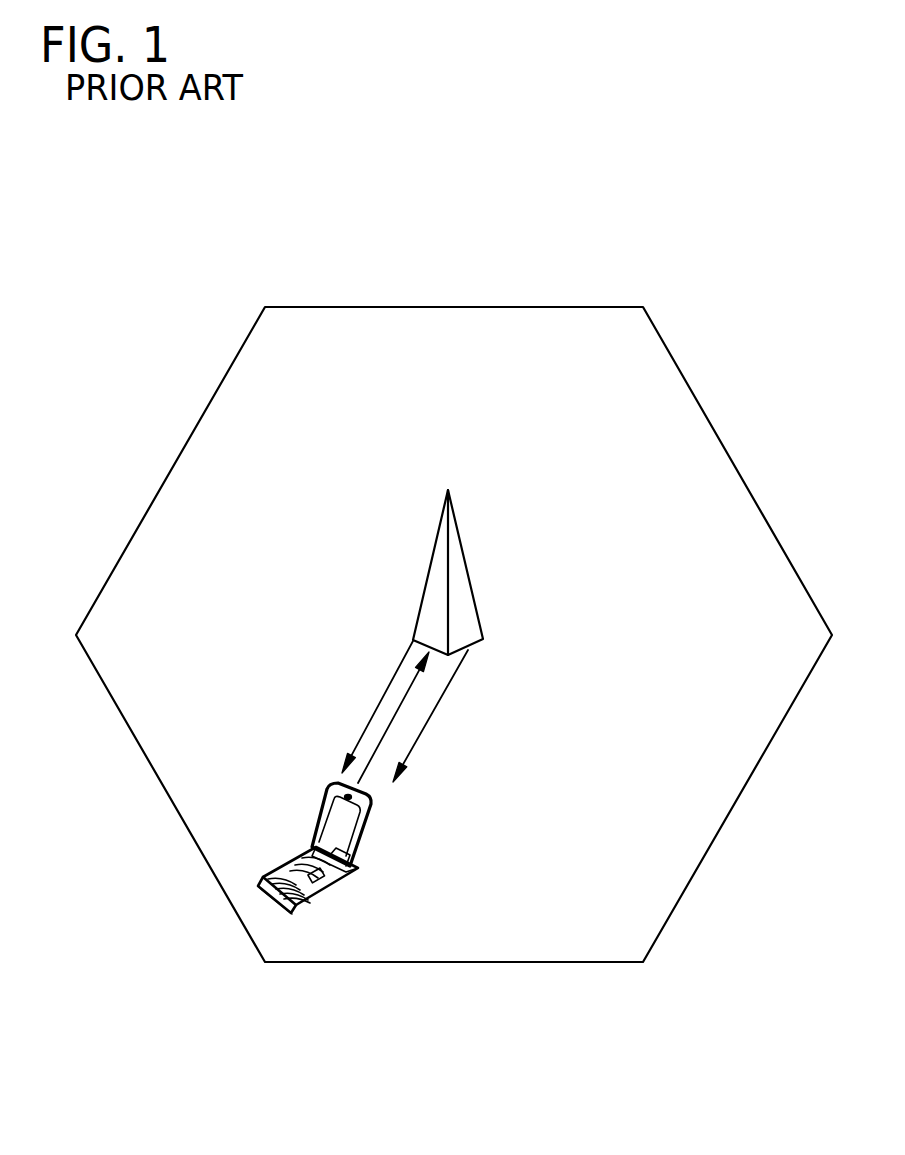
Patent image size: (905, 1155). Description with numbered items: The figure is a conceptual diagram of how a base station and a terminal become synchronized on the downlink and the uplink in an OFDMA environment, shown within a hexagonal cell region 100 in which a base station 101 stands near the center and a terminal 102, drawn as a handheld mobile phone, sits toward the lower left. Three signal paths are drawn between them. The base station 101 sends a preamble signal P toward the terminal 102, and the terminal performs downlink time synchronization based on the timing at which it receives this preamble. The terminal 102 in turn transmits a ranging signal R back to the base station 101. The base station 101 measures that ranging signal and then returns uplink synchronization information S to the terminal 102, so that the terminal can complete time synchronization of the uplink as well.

The cell 100 is at (455, 307).
The base station 101 is at (467, 563).
The terminal 1 102 is at (318, 895).
The preamble signal P is at (377, 705).
The ranging signal R is at (388, 730).
The uplink synchronization information S is at (440, 697).